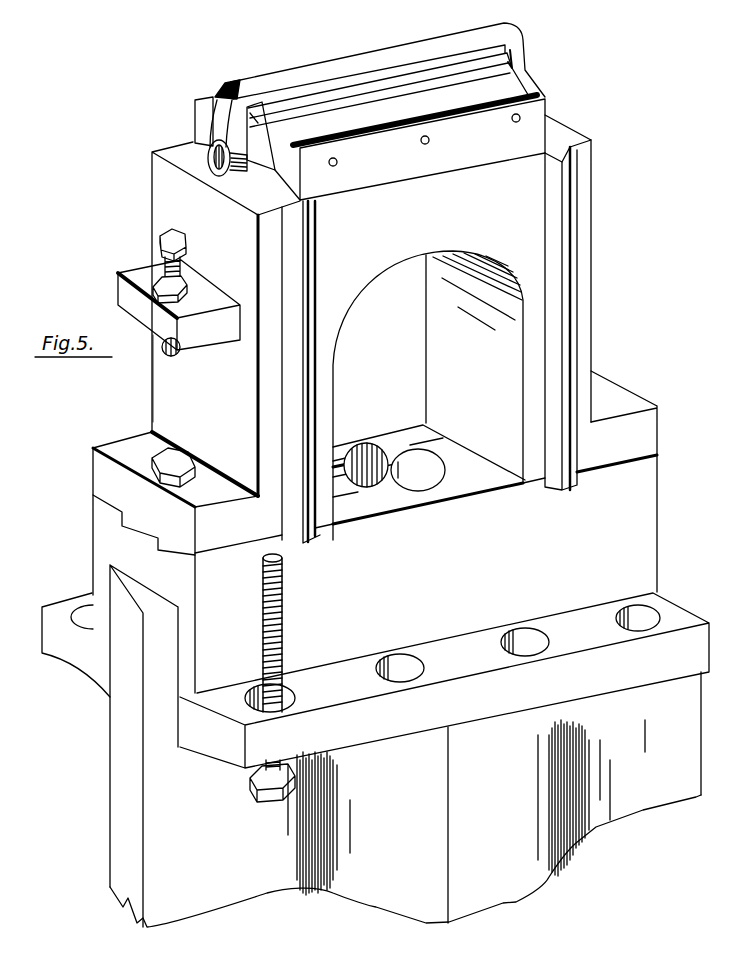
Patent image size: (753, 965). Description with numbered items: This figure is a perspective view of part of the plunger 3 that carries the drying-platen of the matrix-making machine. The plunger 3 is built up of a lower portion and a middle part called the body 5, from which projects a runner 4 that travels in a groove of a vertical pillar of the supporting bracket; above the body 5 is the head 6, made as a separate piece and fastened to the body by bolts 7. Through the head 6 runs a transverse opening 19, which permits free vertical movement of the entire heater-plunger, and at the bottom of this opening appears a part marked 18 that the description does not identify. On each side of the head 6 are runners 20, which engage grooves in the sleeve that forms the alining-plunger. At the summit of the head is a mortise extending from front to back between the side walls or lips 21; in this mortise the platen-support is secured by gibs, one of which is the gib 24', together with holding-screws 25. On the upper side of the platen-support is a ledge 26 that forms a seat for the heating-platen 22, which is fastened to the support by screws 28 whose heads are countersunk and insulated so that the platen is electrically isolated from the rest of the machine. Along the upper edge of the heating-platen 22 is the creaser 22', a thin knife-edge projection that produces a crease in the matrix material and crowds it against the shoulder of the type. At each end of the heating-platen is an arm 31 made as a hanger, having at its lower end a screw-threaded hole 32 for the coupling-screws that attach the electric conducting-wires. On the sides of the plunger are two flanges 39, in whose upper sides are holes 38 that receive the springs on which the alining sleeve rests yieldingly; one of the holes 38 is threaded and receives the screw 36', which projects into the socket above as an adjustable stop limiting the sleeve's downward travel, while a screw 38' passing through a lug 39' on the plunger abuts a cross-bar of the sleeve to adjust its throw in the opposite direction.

The plunger 3 is at (87, 513).
The runner 4 is at (128, 745).
The body 5 is at (444, 680).
The head 6 is at (521, 272).
The bolts 7 is at (172, 457).
The roller 18 is at (407, 473).
The transverse opening 19 is at (409, 373).
The runners 20 is at (563, 335).
The side walls or lips 21 is at (453, 137).
The heating-platen 22 is at (393, 88).
The creaser 22' is at (388, 52).
The gib 24' is at (542, 48).
The holding-screws 25 is at (233, 95).
The ledge 26 is at (205, 110).
The screws 28 is at (427, 83).
The arm 31 is at (220, 128).
The screw-threaded hole 32 is at (208, 163).
The screw 36' is at (258, 678).
The holes 38 is at (452, 641).
The screw 38' is at (142, 321).
The flanges 39 is at (420, 821).
The lug 39' is at (156, 305).